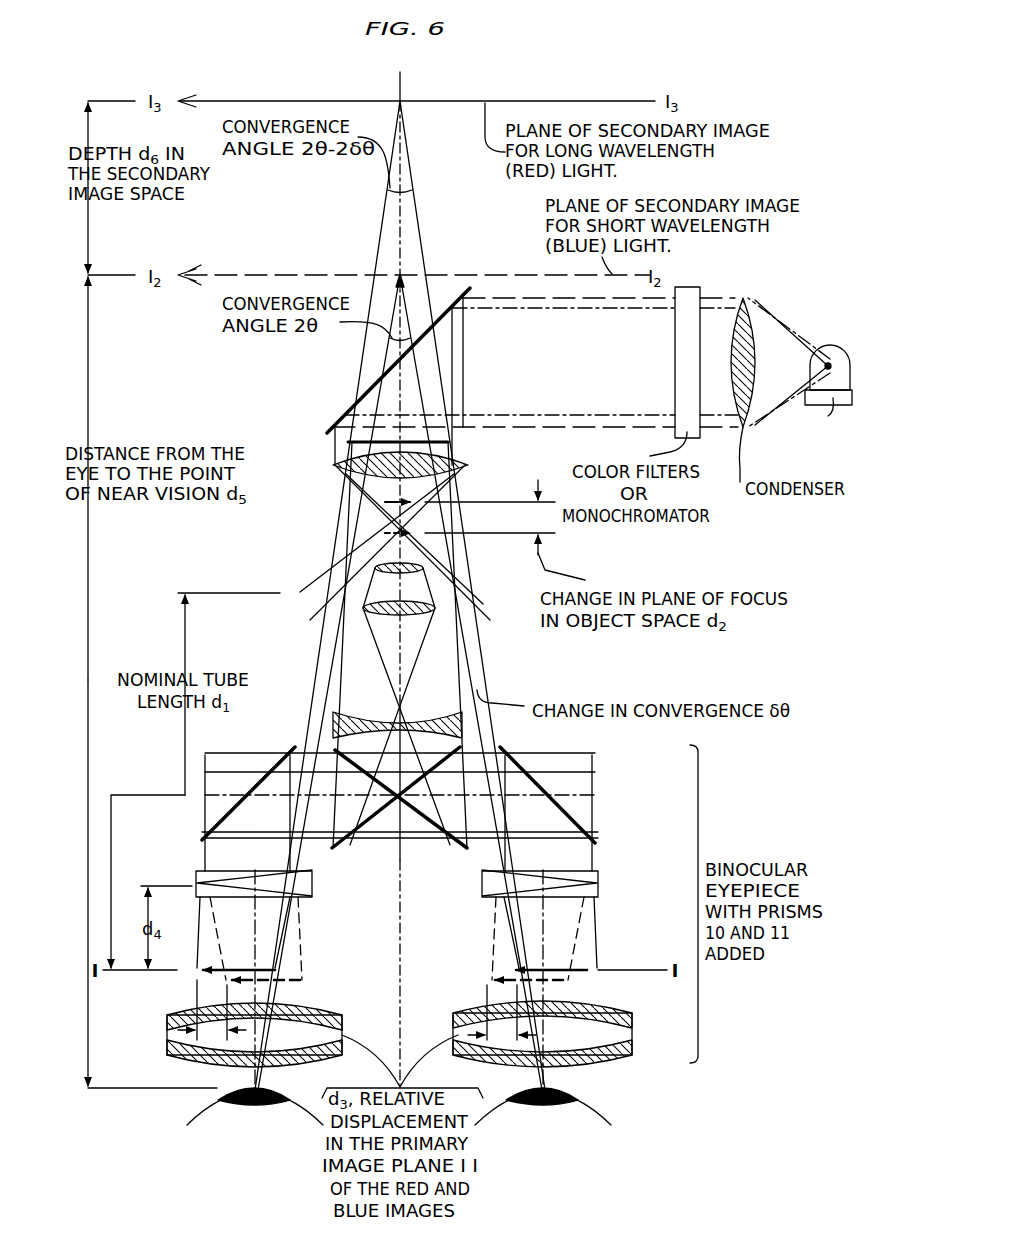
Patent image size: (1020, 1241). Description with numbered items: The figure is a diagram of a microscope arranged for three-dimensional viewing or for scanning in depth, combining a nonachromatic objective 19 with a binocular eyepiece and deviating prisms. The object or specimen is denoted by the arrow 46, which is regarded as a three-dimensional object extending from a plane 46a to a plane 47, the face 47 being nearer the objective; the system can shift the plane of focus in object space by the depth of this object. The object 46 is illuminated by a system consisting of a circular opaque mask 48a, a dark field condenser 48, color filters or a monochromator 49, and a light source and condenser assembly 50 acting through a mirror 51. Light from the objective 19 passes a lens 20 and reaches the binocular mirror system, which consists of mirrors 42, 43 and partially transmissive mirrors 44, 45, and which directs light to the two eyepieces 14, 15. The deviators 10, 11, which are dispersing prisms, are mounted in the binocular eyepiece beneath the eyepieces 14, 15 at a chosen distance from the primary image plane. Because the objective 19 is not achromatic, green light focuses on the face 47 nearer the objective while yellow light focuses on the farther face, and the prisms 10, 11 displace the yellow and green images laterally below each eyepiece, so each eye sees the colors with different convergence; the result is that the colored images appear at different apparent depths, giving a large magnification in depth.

The deviator 10 is at (480, 888).
The deviator 11 is at (316, 880).
The eyepiece 14 is at (632, 1035).
The eyepiece 15 is at (167, 1040).
The nonachromatic objective 19 is at (428, 585).
The negative lens 20 is at (462, 722).
The mirror 42 is at (227, 815).
The mirror 43 is at (575, 815).
The partially transmissive mirror 44 is at (365, 820).
The partially transmissive mirror 45 is at (424, 820).
The object 46 is at (375, 500).
The plane 46a is at (514, 500).
The plane 47 is at (375, 532).
The dark field condenser 48 is at (338, 468).
The circular opaque mask 48a is at (456, 440).
The color filters or monochromator 49 is at (592, 530).
The light source and condenser assembly 50 is at (816, 345).
The mirror 51 is at (338, 420).